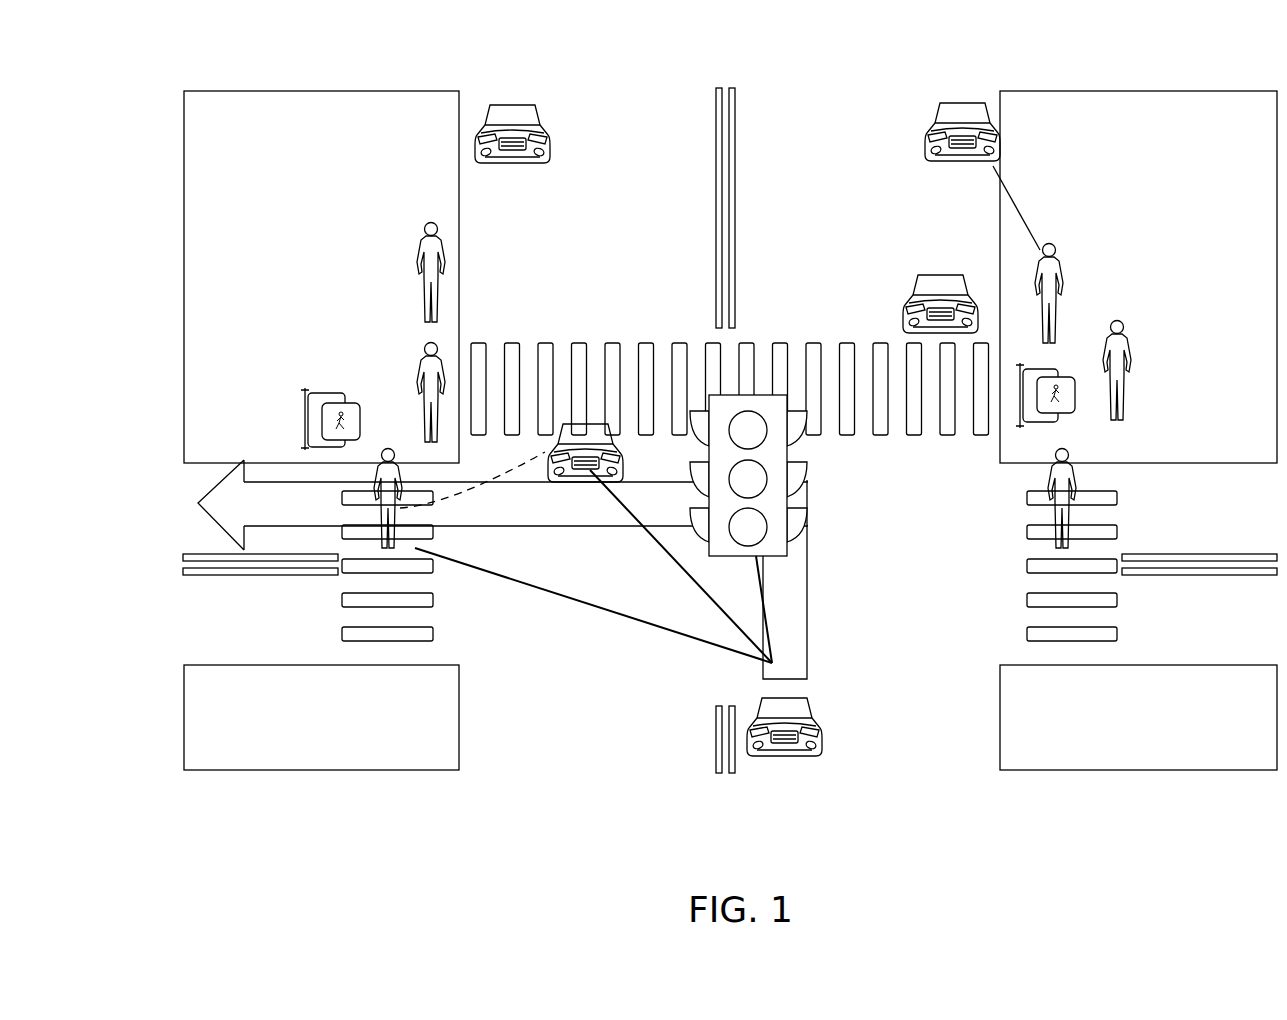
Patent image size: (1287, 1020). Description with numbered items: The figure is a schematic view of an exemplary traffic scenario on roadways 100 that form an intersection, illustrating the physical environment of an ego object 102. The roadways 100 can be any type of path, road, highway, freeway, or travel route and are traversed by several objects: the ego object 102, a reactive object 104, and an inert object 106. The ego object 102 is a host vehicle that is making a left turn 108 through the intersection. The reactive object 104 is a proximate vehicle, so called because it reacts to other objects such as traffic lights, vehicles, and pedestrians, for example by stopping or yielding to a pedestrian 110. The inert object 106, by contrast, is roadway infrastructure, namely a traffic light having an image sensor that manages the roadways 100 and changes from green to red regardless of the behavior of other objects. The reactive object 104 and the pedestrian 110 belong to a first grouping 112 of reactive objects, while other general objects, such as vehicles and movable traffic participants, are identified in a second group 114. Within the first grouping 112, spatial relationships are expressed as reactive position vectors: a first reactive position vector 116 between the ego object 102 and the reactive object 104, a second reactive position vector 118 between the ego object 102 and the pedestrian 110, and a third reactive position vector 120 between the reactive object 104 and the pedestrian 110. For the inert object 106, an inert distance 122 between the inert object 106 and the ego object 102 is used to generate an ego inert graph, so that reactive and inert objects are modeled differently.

The roadways 100 is at (360, 58).
The ego object 102 is at (812, 706).
The reactive object 104 is at (592, 422).
The inert object 106 is at (766, 395).
The left turn 108 is at (216, 480).
The pedestrian 110 is at (370, 493).
The first grouping 112 is at (594, 646).
The second group 114 is at (788, 119).
The first reactive position vector 116 is at (708, 594).
The second reactive position vector 118 is at (545, 591).
The third reactive position vector 120 is at (462, 498).
The inert distance 122 is at (767, 628).